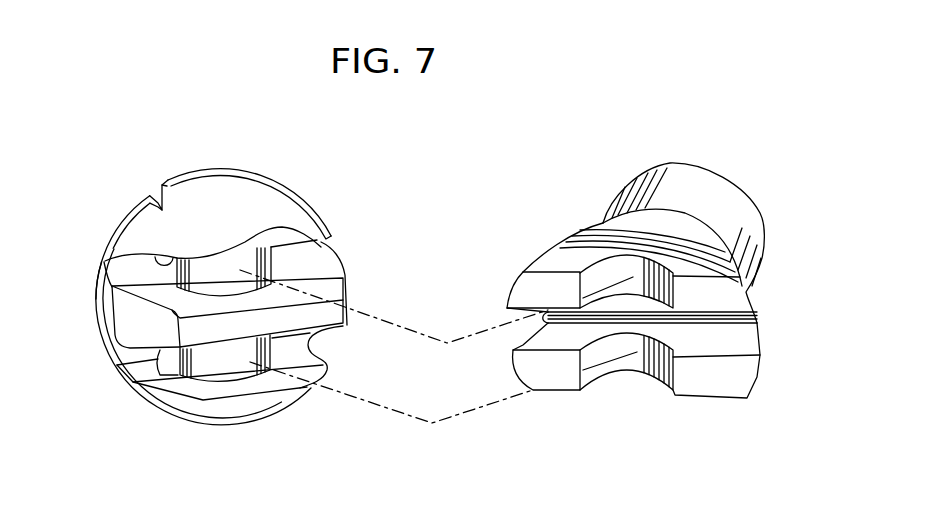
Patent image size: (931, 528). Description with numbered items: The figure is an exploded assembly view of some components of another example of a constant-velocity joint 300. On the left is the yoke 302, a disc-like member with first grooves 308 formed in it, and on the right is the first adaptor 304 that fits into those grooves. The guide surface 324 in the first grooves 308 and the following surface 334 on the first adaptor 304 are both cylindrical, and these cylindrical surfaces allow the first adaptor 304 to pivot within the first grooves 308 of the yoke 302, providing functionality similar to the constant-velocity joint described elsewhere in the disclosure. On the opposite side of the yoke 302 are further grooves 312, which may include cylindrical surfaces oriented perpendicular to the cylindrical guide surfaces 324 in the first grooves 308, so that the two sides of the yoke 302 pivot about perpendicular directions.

The constant-velocity joint 300 is at (566, 127).
The yoke 302 is at (280, 190).
The first adaptor 304 is at (759, 215).
The first grooves 308 is at (100, 272).
The grooves 312 is at (182, 187).
The guide surface 324 is at (318, 266).
The following surface 334 is at (613, 273).